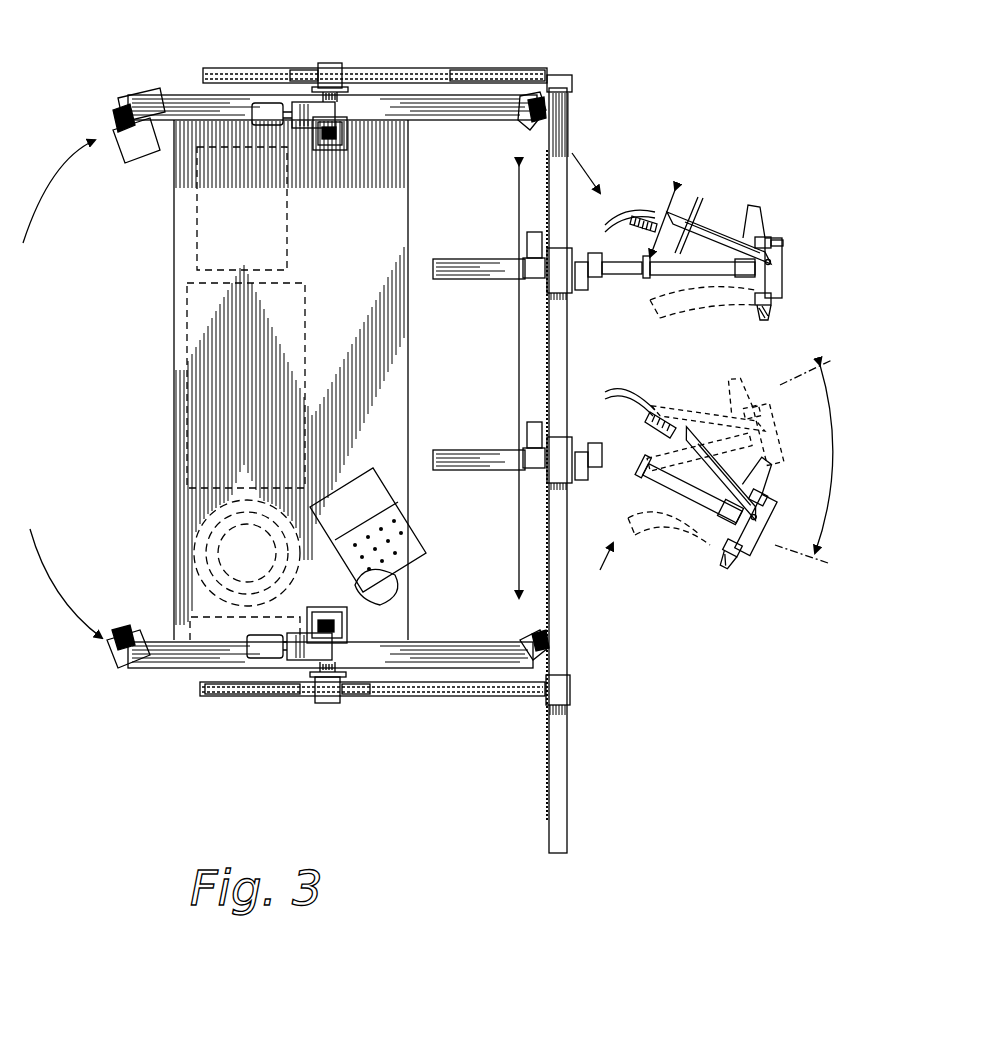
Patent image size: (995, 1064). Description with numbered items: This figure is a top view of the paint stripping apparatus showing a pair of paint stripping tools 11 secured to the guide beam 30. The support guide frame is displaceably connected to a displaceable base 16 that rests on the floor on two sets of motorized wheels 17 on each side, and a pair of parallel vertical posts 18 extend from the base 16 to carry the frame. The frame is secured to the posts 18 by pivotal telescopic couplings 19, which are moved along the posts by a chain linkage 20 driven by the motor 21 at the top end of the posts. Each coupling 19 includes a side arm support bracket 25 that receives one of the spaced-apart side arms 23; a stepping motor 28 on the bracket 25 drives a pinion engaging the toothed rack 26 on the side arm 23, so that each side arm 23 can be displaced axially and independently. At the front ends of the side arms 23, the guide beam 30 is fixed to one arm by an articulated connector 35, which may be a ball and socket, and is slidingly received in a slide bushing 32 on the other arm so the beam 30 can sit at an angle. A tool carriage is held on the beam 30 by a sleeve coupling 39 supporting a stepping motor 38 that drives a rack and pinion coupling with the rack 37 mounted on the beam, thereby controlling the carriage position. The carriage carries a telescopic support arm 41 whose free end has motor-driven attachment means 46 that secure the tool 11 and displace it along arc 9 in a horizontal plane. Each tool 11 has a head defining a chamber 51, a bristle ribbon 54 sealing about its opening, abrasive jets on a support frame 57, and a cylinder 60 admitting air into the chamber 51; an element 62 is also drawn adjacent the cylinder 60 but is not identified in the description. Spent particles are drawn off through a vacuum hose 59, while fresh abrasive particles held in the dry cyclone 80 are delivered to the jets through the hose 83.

The arc 9 is at (838, 428).
The dry abrasive paint stripping tool 11 is at (758, 200).
The displaceable base 16 is at (348, 289).
The motorized wheels 17 is at (160, 90).
The vertical posts 18 is at (336, 150).
The pivotal telescopic coupling 19 is at (345, 135).
The chain linkage 20 is at (320, 135).
The motor 21 is at (296, 105).
The side arms 23 is at (445, 68).
The side arm support bracket 25 is at (170, 85).
The toothed rack 26 is at (490, 68).
The stepping motor 28 is at (330, 63).
The guide beam 30 is at (560, 370).
The slide bushing 32 is at (572, 692).
The articulated connector 35 is at (562, 75).
The rack 37 is at (547, 350).
The stepping motor 38 is at (530, 245).
The sleeve coupling 39 is at (565, 255).
The telescopic support arm 41 is at (478, 270).
The attachment means 46 is at (640, 468).
The chamber 51 is at (775, 242).
The bristle ribbon 54 is at (782, 290).
The support frame 57 is at (698, 197).
The vacuum hose 59 is at (665, 295).
The cylinder 60 is at (730, 228).
The piston rod 62 is at (712, 280).
The dry cyclone 80 is at (200, 552).
The hose 83 is at (610, 220).